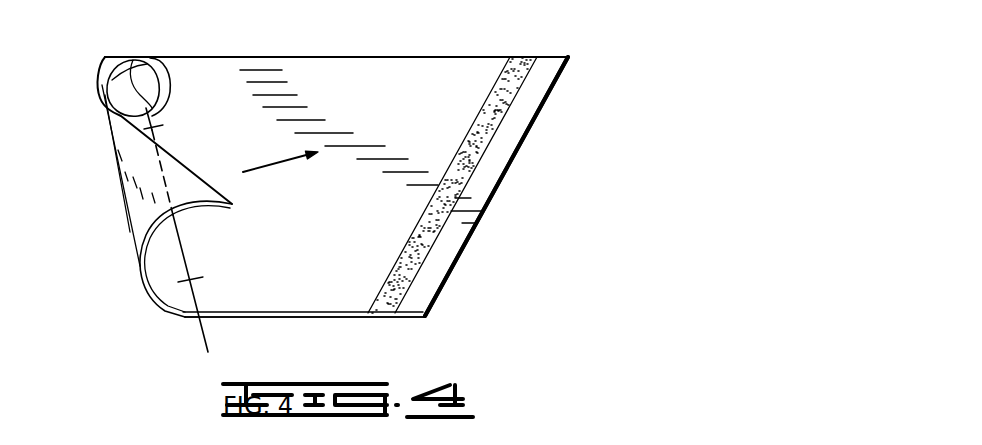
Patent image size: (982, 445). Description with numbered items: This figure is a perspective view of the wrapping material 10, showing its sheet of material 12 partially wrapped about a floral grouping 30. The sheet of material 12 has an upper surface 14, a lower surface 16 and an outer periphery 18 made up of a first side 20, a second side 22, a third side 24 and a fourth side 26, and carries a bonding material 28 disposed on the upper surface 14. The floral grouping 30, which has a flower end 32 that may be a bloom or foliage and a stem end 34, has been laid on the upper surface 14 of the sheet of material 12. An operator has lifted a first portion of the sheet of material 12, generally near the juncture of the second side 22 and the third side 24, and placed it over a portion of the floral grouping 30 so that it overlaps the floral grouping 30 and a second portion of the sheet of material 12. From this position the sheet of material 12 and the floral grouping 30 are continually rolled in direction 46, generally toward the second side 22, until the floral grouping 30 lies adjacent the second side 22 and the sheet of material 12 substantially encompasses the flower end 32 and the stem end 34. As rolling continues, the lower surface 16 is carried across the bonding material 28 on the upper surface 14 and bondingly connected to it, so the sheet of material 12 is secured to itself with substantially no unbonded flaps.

The wrapping material 10 is at (570, 57).
The sheet of material 12 is at (410, 57).
The upper surface 14 is at (222, 68).
The lower surface 16 is at (134, 168).
The outer periphery 18 is at (532, 130).
The first side 20 is at (495, 191).
The second side 22 is at (103, 72).
The third side 24 is at (302, 316).
The fourth side 26 is at (316, 57).
The bonding material 28 is at (408, 268).
The floral grouping 30 is at (157, 136).
The flower end 32 is at (136, 60).
The stem end 34 is at (201, 332).
The direction 46 is at (272, 170).